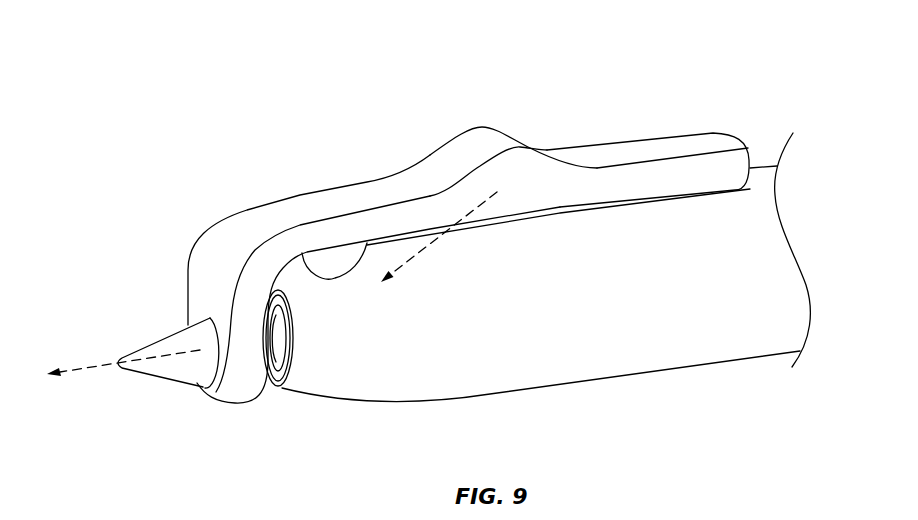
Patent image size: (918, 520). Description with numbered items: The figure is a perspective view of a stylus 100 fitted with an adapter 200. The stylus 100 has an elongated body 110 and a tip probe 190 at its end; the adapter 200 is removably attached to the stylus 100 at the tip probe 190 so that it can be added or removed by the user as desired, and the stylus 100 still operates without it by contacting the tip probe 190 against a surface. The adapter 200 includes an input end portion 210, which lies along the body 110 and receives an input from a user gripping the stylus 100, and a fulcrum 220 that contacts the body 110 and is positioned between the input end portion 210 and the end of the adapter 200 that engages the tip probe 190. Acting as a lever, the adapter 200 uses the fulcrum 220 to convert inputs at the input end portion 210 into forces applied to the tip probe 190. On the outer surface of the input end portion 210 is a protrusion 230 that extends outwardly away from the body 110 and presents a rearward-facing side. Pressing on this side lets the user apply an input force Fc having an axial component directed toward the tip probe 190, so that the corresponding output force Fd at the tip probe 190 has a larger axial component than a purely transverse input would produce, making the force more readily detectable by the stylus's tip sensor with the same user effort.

The stylus 100 is at (156, 84).
The body 110 is at (647, 376).
The tip probe 190 is at (129, 372).
The adapter 200 is at (210, 227).
The input end portion 210 is at (677, 147).
The fulcrum 220 is at (348, 263).
The protrusion 230 is at (492, 140).
The input force Fc is at (430, 247).
The output force Fd is at (73, 366).